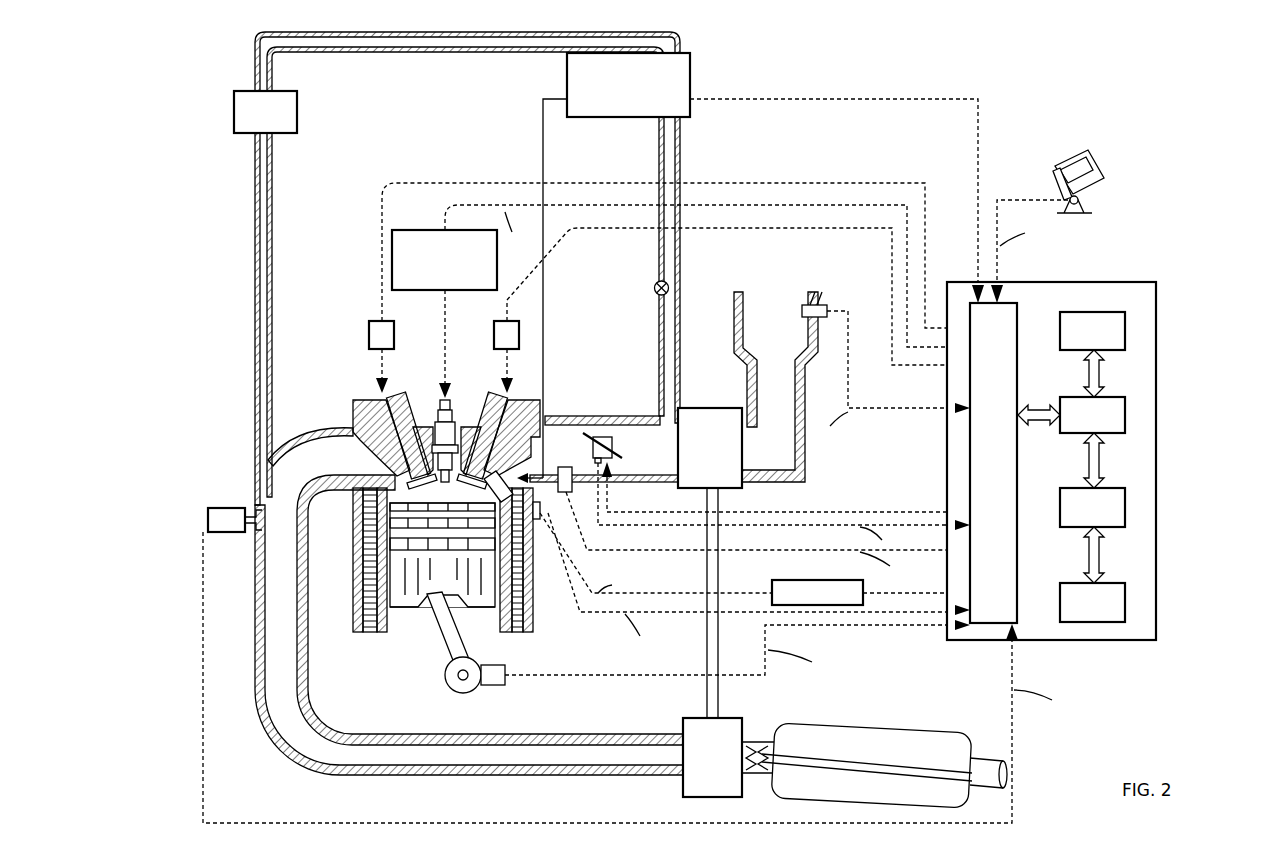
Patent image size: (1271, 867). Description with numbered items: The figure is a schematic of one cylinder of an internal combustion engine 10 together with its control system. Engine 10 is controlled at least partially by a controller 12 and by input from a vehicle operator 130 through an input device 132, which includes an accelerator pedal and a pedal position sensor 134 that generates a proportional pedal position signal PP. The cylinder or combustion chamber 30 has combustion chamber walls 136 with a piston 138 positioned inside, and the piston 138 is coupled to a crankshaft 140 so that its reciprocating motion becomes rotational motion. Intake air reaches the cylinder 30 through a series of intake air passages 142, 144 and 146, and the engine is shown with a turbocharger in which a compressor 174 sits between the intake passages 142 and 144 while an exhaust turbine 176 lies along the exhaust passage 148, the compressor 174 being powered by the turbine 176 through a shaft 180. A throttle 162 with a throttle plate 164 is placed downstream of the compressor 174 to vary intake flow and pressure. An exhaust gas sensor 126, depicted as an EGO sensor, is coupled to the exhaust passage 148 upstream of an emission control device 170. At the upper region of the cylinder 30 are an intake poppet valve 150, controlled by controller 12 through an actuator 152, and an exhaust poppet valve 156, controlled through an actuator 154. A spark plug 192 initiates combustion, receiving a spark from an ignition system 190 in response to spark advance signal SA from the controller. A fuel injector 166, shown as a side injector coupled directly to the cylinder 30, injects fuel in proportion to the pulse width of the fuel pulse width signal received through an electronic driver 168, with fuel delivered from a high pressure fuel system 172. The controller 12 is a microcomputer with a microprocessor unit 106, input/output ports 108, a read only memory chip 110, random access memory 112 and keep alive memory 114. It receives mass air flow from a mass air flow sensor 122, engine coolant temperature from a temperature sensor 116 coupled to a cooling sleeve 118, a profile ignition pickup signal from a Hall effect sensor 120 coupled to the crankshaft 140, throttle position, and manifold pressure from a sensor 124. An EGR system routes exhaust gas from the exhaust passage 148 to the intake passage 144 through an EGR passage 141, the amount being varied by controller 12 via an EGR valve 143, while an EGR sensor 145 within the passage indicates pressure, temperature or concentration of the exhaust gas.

The internal combustion engine 10 is at (136, 130).
The controller 12 is at (1160, 284).
The cylinder 30 is at (378, 506).
The microprocessor unit 106 is at (1128, 415).
The input/output ports 108 is at (1020, 300).
The read only memory chip 110 is at (1128, 330).
The random access memory 112 is at (1128, 510).
The keep alive memory 114 is at (1128, 604).
The temperature sensor 116 is at (547, 516).
The cooling sleeve 118 is at (538, 525).
The Hall effect sensor 120 is at (500, 688).
The mass air flow sensor 122 is at (822, 306).
The manifold pressure sensor 124 is at (568, 498).
The exhaust gas sensor 126 is at (208, 514).
The vehicle operator 130 is at (1102, 166).
The input device 132 is at (1060, 180).
The pedal position sensor 134 is at (1086, 203).
The combustion chamber walls 136 is at (385, 628).
The piston 138 is at (430, 565).
The crankshaft 140 is at (450, 690).
The EGR passage 141 is at (679, 162).
The intake air passage 142 is at (796, 332).
The EGR valve 143 is at (670, 286).
The intake air passage 144 is at (670, 458).
The EGR sensor 145 is at (297, 112).
The intake air passage 146 is at (580, 458).
The exhaust passage 148 is at (345, 469).
The intake poppet valve 150 is at (450, 432).
The actuator 152 is at (494, 332).
The actuator 154 is at (367, 330).
The exhaust poppet valve 156 is at (376, 442).
The throttle 162 is at (606, 435).
The throttle plate 164 is at (580, 430).
The fuel injector 166 is at (503, 478).
The electronic driver 168 is at (773, 582).
The emission control device 170 is at (932, 736).
The high pressure fuel system 172 is at (690, 72).
The compressor 174 is at (690, 408).
The exhaust turbine 176 is at (683, 790).
The shaft 180 is at (720, 694).
The ignition system 190 is at (418, 230).
The spark plug 192 is at (441, 412).